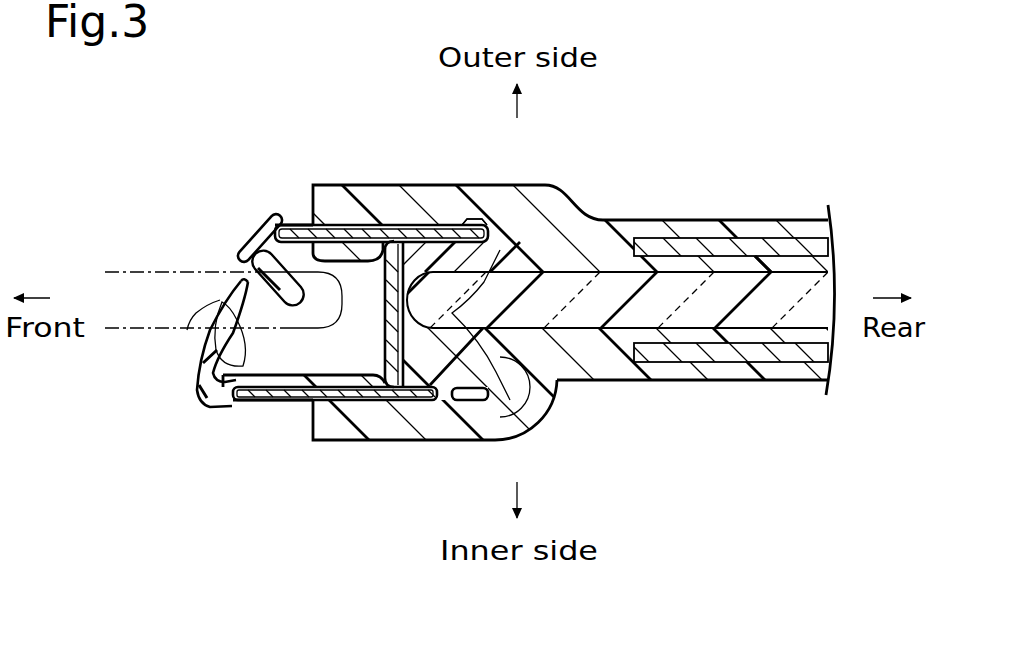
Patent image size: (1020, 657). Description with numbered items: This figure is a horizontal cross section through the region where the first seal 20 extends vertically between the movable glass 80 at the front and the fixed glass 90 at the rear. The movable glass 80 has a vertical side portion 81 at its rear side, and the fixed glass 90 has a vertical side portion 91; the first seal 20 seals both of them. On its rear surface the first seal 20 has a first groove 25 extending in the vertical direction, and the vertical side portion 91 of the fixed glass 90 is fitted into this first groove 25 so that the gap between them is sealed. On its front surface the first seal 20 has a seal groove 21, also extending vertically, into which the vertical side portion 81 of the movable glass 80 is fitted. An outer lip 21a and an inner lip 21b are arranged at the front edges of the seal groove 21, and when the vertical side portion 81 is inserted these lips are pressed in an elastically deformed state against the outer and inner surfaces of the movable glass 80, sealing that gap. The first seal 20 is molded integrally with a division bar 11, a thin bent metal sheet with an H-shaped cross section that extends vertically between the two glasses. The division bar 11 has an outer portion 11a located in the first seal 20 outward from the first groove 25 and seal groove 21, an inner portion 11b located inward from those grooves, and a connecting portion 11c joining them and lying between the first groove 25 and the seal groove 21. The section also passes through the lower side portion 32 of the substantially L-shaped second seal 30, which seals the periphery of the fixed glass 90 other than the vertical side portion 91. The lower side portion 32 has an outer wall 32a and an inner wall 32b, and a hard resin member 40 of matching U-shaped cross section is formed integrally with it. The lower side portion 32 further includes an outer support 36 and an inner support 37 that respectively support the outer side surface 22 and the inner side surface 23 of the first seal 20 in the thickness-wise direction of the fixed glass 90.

The second seal 30 is at (567, 287).
The lower side portion 32 is at (606, 210).
The outer wall 32a is at (806, 219).
The inner wall 32b is at (779, 381).
The outer support 36 is at (330, 184).
The inner support 37 is at (331, 442).
The resin member 40 is at (687, 237).
The fixed glass 90 is at (759, 262).
The vertical side portion 91 is at (500, 250).
The first groove 25 is at (548, 409).
The division bar 11 is at (360, 317).
The outer portion 11a is at (356, 226).
The inner portion 11b is at (340, 402).
The connecting portion 11c is at (425, 393).
The outer side surface 22 is at (408, 227).
The inner side surface 23 is at (409, 400).
The first seal 20 is at (215, 333).
The seal groove 21 is at (295, 362).
The outer lip 21a is at (258, 246).
The inner lip 21b is at (220, 300).
The movable glass 80 is at (133, 267).
The vertical side portion 81 is at (229, 350).